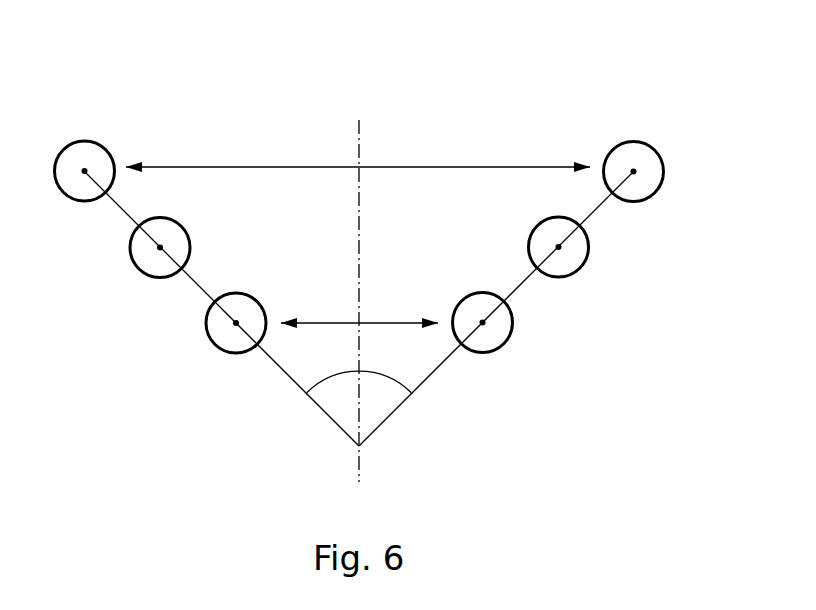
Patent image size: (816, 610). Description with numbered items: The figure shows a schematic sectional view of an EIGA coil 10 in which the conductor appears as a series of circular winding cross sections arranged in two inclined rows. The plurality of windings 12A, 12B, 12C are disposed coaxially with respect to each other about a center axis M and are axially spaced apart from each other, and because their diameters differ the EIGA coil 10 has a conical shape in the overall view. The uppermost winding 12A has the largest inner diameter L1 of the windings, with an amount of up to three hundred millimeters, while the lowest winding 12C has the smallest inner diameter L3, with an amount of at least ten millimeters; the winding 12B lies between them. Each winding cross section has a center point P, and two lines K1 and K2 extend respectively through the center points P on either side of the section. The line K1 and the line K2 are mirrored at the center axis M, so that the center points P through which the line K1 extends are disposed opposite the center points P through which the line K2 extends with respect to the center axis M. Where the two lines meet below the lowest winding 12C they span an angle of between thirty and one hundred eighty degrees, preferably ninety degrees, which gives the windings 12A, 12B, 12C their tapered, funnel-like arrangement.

The EIGA coil 10 is at (124, 94).
The uppermost winding 12A is at (653, 173).
The winding 12B is at (575, 249).
The lowest winding 12C is at (497, 335).
The line K1 is at (192, 283).
The line K2 is at (525, 283).
The center axis M is at (360, 220).
The inner diameter L1 is at (358, 158).
The inner diameter L3 is at (359, 315).
The center point P is at (364, 237).